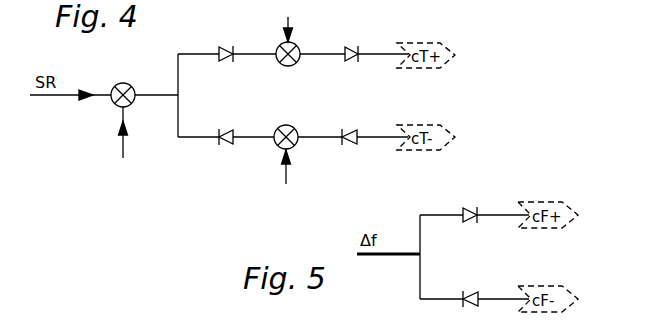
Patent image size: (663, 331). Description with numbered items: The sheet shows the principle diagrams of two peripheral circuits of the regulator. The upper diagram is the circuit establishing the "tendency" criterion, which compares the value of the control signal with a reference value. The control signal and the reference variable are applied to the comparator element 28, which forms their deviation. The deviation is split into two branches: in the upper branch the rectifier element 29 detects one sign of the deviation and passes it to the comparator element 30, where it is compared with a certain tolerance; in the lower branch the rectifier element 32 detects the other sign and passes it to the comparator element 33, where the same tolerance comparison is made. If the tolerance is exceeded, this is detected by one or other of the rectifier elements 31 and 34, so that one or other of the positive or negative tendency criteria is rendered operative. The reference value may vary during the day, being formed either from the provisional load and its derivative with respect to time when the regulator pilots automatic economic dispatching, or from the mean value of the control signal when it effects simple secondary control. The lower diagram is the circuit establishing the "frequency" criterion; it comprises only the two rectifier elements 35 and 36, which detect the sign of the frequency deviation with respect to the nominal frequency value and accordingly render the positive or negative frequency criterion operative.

In FIG. 4, the comparator element 28 is at (125, 66).
In FIG. 4, the rectifier element 29 is at (230, 47).
In FIG. 4, the comparator element 30 is at (297, 45).
In FIG. 4, the rectifier element 31 is at (354, 48).
In FIG. 4, the rectifier element 32 is at (226, 148).
In FIG. 4, the comparator element 33 is at (292, 149).
In FIG. 4, the rectifier element 34 is at (352, 130).
In FIG. 5, the rectifier element 35 is at (470, 208).
In FIG. 5, the rectifier element 36 is at (468, 305).